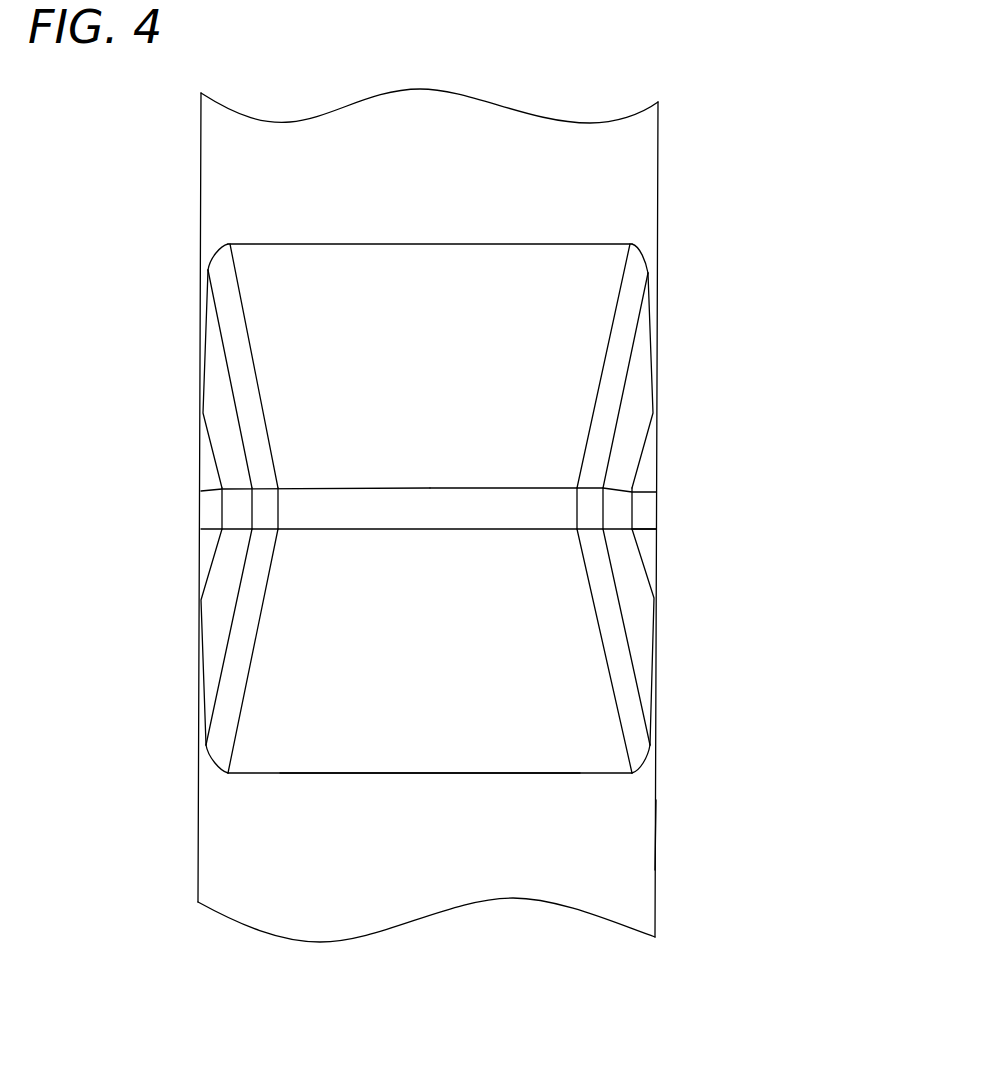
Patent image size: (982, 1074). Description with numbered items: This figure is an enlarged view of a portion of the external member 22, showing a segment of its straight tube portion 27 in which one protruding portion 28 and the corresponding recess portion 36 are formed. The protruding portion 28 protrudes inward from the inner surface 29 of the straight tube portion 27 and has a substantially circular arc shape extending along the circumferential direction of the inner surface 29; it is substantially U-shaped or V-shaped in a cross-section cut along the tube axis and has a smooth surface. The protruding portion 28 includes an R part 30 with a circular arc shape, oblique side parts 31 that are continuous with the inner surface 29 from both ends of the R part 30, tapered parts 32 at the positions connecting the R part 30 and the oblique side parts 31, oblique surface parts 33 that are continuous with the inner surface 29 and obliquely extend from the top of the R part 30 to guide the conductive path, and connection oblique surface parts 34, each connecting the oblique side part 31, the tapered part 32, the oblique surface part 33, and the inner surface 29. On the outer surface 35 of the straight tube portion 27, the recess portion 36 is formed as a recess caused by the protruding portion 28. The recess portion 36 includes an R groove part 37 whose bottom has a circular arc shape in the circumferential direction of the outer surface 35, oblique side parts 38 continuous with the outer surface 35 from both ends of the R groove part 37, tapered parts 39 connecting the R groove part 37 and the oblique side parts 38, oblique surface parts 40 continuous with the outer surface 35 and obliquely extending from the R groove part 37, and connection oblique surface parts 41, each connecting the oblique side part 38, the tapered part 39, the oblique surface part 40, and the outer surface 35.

The external member 22 is at (193, 149).
The straight tube portion 27 is at (225, 195).
The protruding portion 28 is at (362, 503).
The inner surface 29 is at (632, 832).
The R part 30 is at (475, 504).
The oblique side part 31 is at (623, 520).
The tapered part 32 is at (597, 520).
The oblique surface part 33 is at (450, 760).
The connection oblique surface part 34 is at (635, 682).
The outer surface 35 is at (637, 865).
The recess portion 36 is at (326, 503).
The R groove part 37 is at (510, 504).
The oblique side part 38 is at (613, 520).
The tapered part 39 is at (587, 520).
The oblique surface part 40 is at (502, 760).
The connection oblique surface part 41 is at (637, 717).